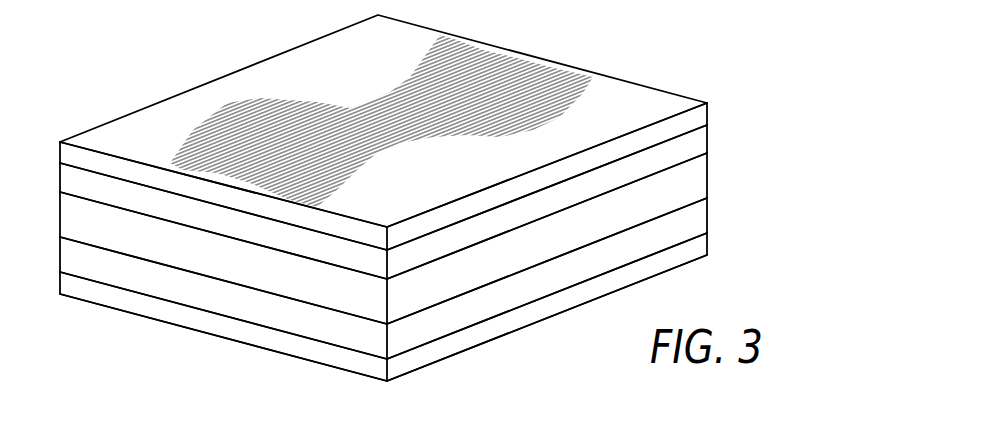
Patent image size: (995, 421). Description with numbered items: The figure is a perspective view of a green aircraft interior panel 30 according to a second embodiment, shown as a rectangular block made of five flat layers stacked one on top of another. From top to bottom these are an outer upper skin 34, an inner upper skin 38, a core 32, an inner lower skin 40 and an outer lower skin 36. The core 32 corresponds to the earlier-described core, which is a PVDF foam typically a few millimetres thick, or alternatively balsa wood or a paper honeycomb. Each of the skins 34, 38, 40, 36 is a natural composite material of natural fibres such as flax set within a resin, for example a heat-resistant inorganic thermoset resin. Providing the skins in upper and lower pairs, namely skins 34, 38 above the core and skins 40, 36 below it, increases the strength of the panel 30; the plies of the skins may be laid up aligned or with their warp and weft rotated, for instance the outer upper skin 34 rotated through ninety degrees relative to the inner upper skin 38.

The green aircraft interior panel 30 is at (88, 82).
The outer upper skin 34 is at (707, 112).
The inner upper skin 38 is at (707, 142).
The core 32 is at (707, 178).
The inner lower skin 40 is at (707, 218).
The outer lower skin 36 is at (707, 245).